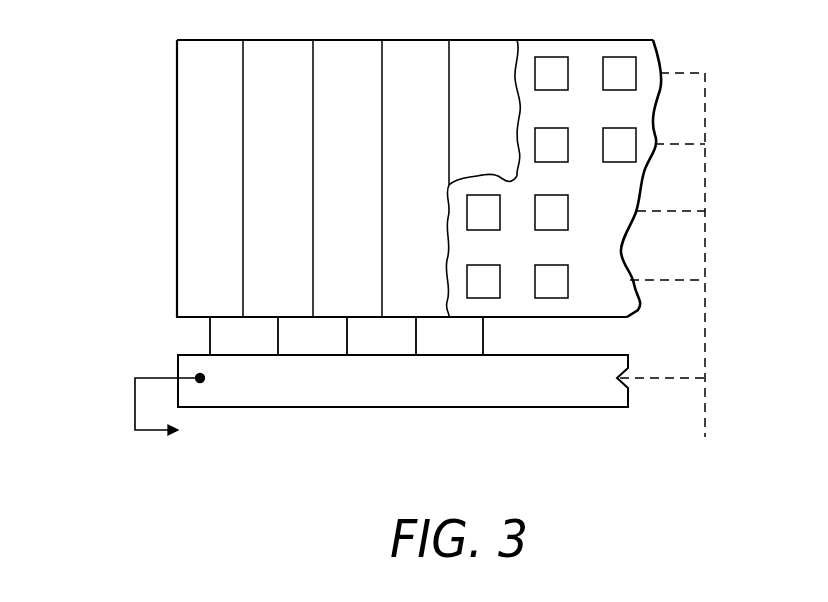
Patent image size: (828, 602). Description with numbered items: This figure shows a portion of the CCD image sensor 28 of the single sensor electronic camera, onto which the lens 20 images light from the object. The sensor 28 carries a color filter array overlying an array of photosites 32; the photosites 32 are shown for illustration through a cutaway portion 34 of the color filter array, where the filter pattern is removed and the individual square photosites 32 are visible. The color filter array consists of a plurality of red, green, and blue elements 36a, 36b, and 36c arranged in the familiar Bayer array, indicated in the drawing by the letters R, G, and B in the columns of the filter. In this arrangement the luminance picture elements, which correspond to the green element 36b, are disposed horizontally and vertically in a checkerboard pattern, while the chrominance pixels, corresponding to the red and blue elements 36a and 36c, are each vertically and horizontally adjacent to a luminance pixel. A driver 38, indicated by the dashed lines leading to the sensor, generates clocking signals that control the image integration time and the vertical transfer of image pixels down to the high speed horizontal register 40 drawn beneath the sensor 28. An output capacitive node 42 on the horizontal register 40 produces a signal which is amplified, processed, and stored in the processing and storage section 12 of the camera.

The processing and storage section 12 is at (178, 415).
The lens 20 is at (276, 38).
The CCD image sensor 28 is at (160, 182).
The photosites 32 is at (553, 57).
The cutaway portion 34 is at (519, 178).
The red element 36a is at (262, 87).
The green element 36b is at (266, 160).
The blue element 36c is at (199, 160).
The driver 38 is at (671, 272).
The high speed horizontal register 40 is at (525, 408).
The output capacitive node 42 is at (204, 378).